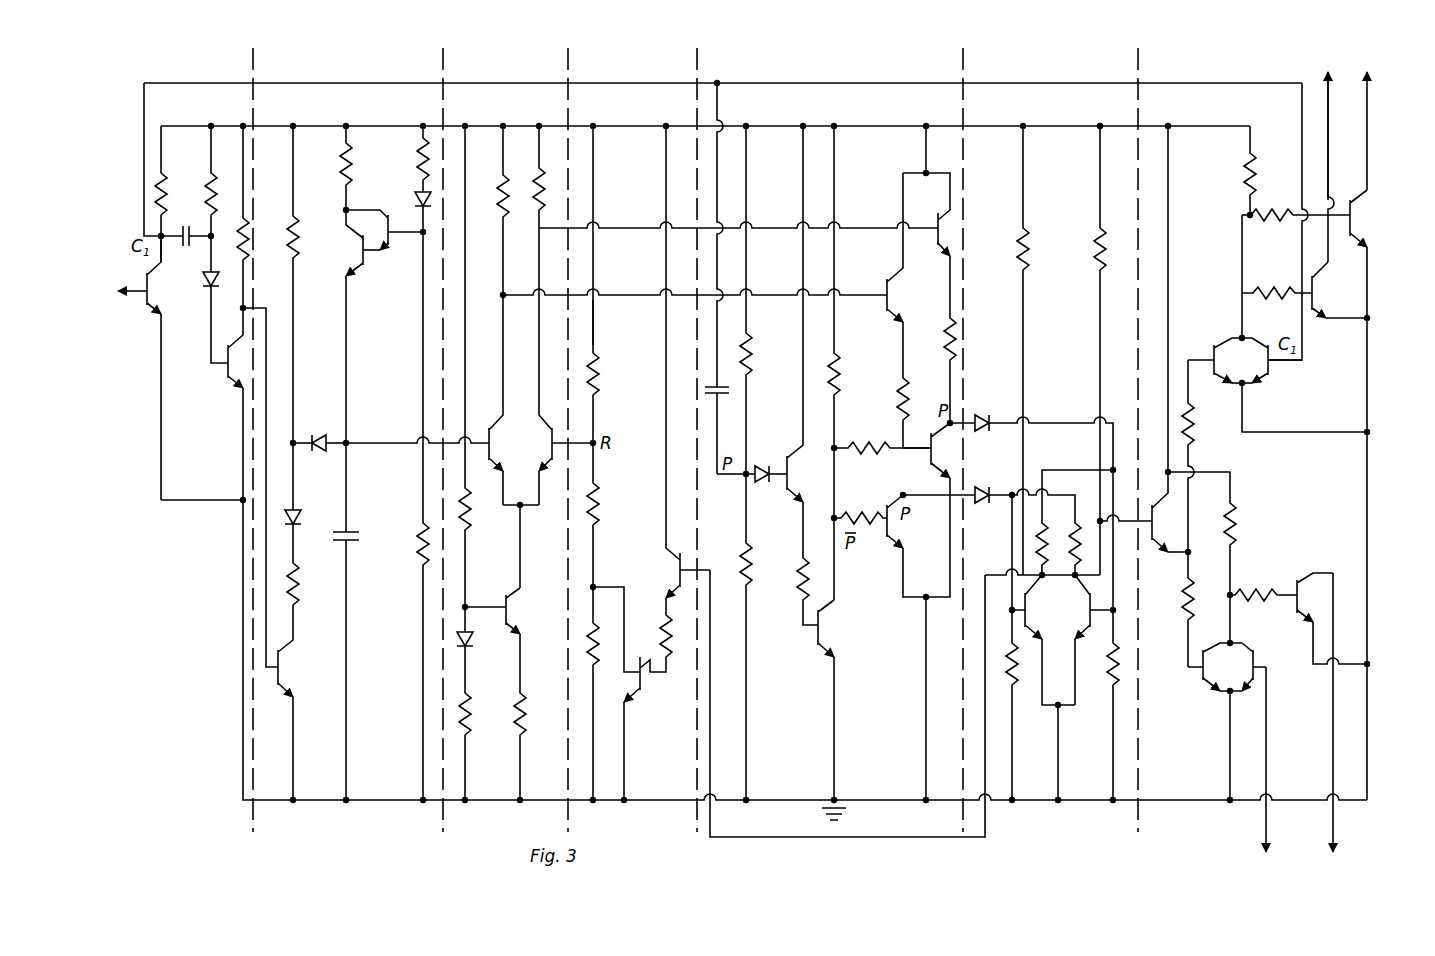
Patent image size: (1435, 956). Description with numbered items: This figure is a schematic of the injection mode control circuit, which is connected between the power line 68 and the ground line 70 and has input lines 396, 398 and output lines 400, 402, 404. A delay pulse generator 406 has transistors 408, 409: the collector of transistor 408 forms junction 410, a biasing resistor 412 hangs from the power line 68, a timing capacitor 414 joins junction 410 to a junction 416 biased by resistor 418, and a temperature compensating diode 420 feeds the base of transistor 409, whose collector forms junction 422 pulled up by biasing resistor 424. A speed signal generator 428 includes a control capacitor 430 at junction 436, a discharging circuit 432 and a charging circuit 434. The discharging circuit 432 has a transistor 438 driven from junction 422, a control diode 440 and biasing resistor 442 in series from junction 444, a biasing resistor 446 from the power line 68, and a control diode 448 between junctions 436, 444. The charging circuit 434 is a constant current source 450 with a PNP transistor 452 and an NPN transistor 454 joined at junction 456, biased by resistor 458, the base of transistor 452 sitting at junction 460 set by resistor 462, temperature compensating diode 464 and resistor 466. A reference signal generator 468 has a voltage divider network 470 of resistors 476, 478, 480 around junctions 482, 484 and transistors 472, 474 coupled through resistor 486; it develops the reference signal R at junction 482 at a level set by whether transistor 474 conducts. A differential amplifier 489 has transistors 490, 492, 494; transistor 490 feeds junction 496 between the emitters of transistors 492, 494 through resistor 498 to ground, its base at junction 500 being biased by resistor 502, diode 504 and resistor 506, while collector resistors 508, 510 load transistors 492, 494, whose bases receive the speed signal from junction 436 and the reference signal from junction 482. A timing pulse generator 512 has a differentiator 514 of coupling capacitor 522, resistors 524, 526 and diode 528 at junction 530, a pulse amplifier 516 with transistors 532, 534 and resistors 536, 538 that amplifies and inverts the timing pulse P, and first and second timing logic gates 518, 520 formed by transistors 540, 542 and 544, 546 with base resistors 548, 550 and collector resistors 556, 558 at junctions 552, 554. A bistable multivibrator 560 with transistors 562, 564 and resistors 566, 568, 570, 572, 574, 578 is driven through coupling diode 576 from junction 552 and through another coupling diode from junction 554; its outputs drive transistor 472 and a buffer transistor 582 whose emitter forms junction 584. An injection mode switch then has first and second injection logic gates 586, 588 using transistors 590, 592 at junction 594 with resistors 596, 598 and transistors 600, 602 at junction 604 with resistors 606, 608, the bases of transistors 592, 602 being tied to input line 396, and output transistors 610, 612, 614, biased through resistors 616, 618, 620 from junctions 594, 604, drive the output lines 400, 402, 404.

The power line 68 is at (370, 126).
The ground line 70 is at (186, 500).
The input line 396 is at (1262, 825).
The input line 398 is at (146, 308).
The output line 400 is at (1330, 836).
The output line 402 is at (1325, 95).
The output line 404 is at (1372, 95).
The delay pulse generator 406 is at (197, 76).
The NPN junction transistor 408 is at (133, 292).
The NPN junction transistor 409 is at (225, 374).
The junction 410 is at (161, 245).
The biasing resistor 412 is at (163, 176).
The timing capacitor 414 is at (185, 246).
The junction 416 is at (213, 240).
The biasing resistor 418 is at (210, 200).
The temperature compensating diode 420 is at (209, 290).
The junction 422 is at (240, 310).
The biasing resistor 424 is at (250, 262).
The speed signal generator 428 is at (327, 76).
The control capacitor 430 is at (358, 534).
The discharging circuit 432 is at (318, 632).
The charging circuit 434 is at (355, 285).
The junction 436 is at (350, 440).
The NPN junction transistor 438 is at (290, 685).
The control diode 440 is at (298, 525).
The biasing resistor 442 is at (300, 598).
The junction 444 is at (296, 438).
The biasing resistor 446 is at (298, 258).
The control diode 448 is at (322, 452).
The constant current source 450 is at (390, 262).
The PNP junction transistor 452 is at (395, 225).
The NPN junction transistor 454 is at (362, 250).
The junction 456 is at (348, 222).
The biasing resistor 458 is at (340, 170).
The junction 460 is at (386, 254).
The biasing resistor 462 is at (420, 160).
The temperature compensating diode 464 is at (418, 195).
The biasing resistor 466 is at (418, 545).
The reference signal generator 468 is at (633, 76).
The voltage divider network 470 is at (618, 345).
The NPN junction transistor 472 is at (678, 572).
The NPN junction transistor 474 is at (642, 682).
The biasing resistor 476 is at (600, 372).
The biasing resistor 478 is at (600, 510).
The biasing resistor 480 is at (598, 650).
The junction 482 is at (598, 447).
The junction 484 is at (600, 588).
The biasing resistor 486 is at (664, 655).
The differential amplifier 489 is at (487, 76).
The NPN junction transistor 490 is at (512, 612).
The NPN junction transistor 492 is at (492, 435).
The NPN junction transistor 494 is at (548, 446).
The junction 496 is at (524, 508).
The biasing resistor 498 is at (516, 715).
The junction 500 is at (467, 604).
The biasing resistor 502 is at (470, 512).
The temperature compensating diode 504 is at (470, 646).
The biasing resistor 506 is at (470, 728).
The biasing resistor 508 is at (503, 195).
The biasing resistor 510 is at (536, 205).
The timing pulse generator 512 is at (777, 76).
The differentiator 514 is at (726, 485).
The pulse amplifier 516 is at (805, 705).
The first timing logic gate 518 is at (890, 368).
The second timing logic gate 520 is at (958, 245).
The coupling capacitor 522 is at (730, 392).
The biasing resistor 524 is at (750, 588).
The biasing resistor 526 is at (752, 345).
The diode 528 is at (762, 466).
The junction 530 is at (748, 480).
The NPN junction transistor 532 is at (790, 463).
The NPN junction transistor 534 is at (825, 618).
The biasing resistor 536 is at (802, 582).
The biasing resistor 538 is at (838, 385).
The NPN junction transistor 540 is at (896, 538).
The PNP junction transistor 542 is at (898, 280).
The NPN junction transistor 544 is at (940, 452).
The PNP junction transistor 546 is at (942, 212).
The biasing resistor 548 is at (855, 512).
The biasing resistor 550 is at (880, 428).
The junction 552 is at (906, 512).
The junction 554 is at (945, 420).
The biasing resistor 556 is at (908, 390).
The biasing resistor 558 is at (955, 335).
The bistable multivibrator 560 is at (1007, 76).
The NPN junction transistor 562 is at (1032, 620).
The NPN junction transistor 564 is at (1094, 622).
The biasing resistor 566 is at (1018, 245).
The biasing resistor 568 is at (1046, 570).
The biasing resistor 570 is at (1097, 245).
The biasing resistor 572 is at (1078, 518).
The biasing resistor 574 is at (1014, 680).
The coupling diode 576 is at (986, 488).
The biasing resistor 578 is at (1110, 680).
The buffer transistor 582 is at (1158, 545).
The junction 584 is at (1192, 554).
The first injection logic gate 586 is at (1212, 705).
The second injection logic gate 588 is at (1232, 330).
The NPN junction transistor 590 is at (1200, 668).
The NPN junction transistor 592 is at (1258, 655).
The junction 594 is at (1228, 598).
The biasing resistor 596 is at (1184, 608).
The biasing resistor 598 is at (1240, 530).
The NPN junction transistor 600 is at (1212, 350).
The NPN junction transistor 602 is at (1275, 365).
The junction 604 is at (1246, 214).
The biasing resistor 606 is at (1196, 435).
The biasing resistor 608 is at (1246, 175).
The output transistor 610 is at (1296, 582).
The output transistor 612 is at (1318, 300).
The output transistor 614 is at (1356, 198).
The biasing resistor 616 is at (1270, 592).
The biasing resistor 618 is at (1262, 298).
The biasing resistor 620 is at (1272, 210).